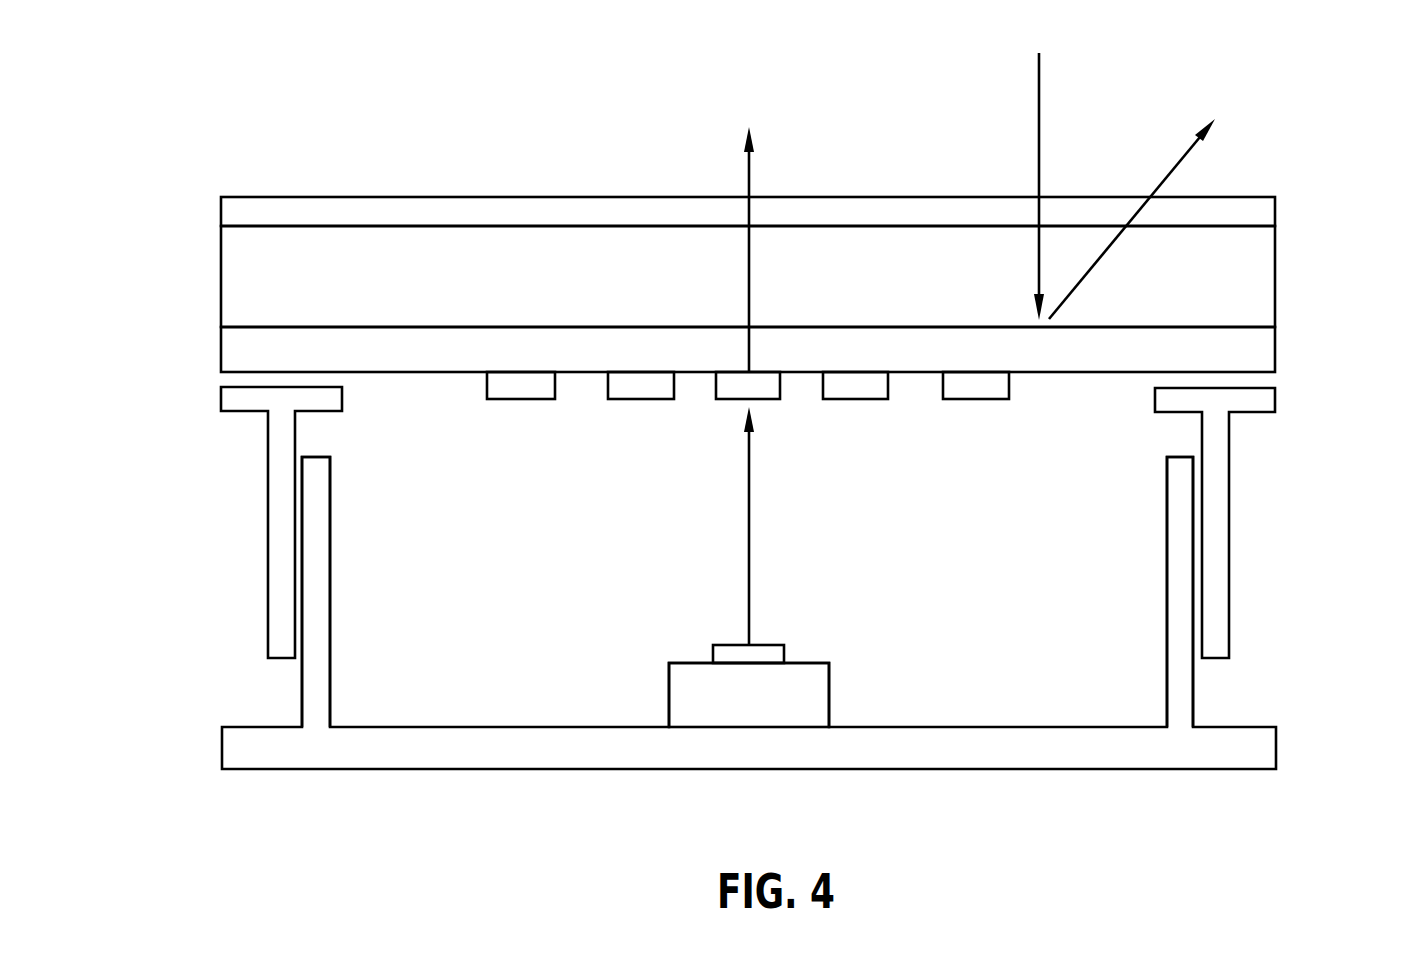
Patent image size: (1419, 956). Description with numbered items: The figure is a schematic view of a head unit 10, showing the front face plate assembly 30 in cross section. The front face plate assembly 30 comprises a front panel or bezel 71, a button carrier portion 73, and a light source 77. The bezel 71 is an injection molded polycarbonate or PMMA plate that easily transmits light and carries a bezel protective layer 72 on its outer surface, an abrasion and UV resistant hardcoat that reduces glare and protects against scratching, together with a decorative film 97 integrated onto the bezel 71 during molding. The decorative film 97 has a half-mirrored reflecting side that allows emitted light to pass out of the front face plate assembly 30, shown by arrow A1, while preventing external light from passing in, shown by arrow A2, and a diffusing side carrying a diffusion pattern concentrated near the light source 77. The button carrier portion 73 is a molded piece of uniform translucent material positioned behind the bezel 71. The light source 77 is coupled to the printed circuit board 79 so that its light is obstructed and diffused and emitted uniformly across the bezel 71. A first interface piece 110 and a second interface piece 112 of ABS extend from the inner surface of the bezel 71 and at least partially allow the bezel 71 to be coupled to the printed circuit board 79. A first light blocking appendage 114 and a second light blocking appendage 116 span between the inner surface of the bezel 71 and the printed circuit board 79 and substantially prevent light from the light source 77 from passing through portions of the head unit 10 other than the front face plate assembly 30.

The head unit 10 is at (701, 622).
The front face plate assembly 30 is at (736, 283).
The bezel 71 is at (238, 275).
The bezel protective layer 72 is at (334, 197).
The button carrier portion 73 is at (537, 400).
The light source 77 is at (727, 650).
The printed circuit board 79 is at (978, 757).
The decorative film 97 is at (228, 352).
The first interface piece 110 is at (274, 514).
The second interface piece 112 is at (1218, 517).
The first light blocking appendage 114 is at (325, 584).
The second light blocking appendage 116 is at (1176, 575).
The arrow A1 is at (750, 185).
The arrow A2 is at (1040, 127).